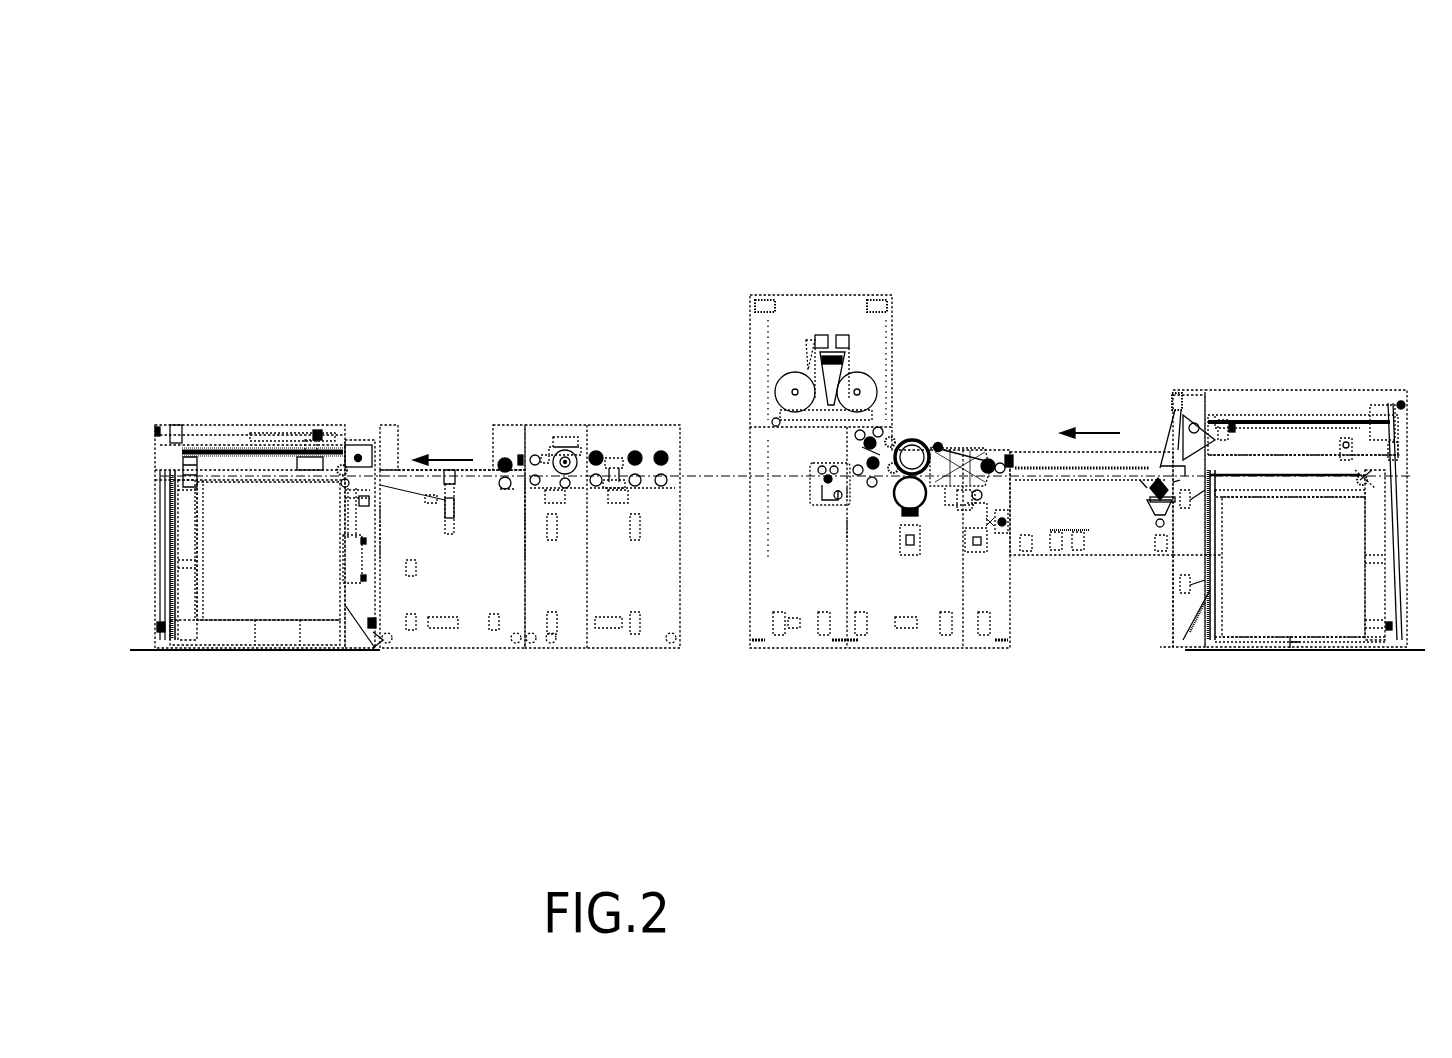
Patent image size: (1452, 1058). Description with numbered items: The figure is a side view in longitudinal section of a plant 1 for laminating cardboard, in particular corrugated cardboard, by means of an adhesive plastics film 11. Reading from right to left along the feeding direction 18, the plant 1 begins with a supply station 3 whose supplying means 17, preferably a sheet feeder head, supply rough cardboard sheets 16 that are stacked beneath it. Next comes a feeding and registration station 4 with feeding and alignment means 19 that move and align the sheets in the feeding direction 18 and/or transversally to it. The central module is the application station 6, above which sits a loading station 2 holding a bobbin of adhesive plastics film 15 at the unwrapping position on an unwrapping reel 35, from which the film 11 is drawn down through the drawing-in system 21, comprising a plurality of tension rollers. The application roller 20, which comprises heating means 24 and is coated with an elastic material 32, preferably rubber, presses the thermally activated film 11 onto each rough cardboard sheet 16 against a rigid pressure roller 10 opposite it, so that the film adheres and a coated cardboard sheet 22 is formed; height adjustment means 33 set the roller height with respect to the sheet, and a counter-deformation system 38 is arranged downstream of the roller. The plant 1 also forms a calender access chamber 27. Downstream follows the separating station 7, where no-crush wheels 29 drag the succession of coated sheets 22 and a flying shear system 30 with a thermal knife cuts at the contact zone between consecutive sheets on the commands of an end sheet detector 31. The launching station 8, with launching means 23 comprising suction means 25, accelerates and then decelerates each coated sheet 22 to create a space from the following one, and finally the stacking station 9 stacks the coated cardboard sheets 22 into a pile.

The plant for laminating cardboard 1 is at (483, 136).
The loading station 2 is at (818, 246).
The supply station 3 is at (1378, 356).
The feeding and registration station 4 is at (1135, 430).
The application station 6 is at (883, 584).
The separating station 7 is at (630, 672).
The launching station 8 is at (433, 670).
The stacking station 9 is at (253, 672).
The pressure roller 10 is at (940, 512).
The adhesive plastics film 11 is at (756, 262).
The bobbin of adhesive plastics film 15 is at (857, 390).
The rough cardboard sheet 16 is at (1293, 578).
The supplying means 17 is at (1270, 437).
The feeding direction 18 is at (437, 458).
The feeding and alignment means 19 is at (999, 556).
The application roller 20 is at (928, 442).
The drawing-in system 21 is at (860, 490).
The coated cardboard sheet 22 is at (270, 520).
The launching means 23 is at (433, 350).
The suction means 25 is at (460, 418).
The heating means 24 is at (909, 500).
The calender access chamber 27 is at (812, 578).
The no-crush wheels 29 is at (593, 428).
The flying shear system 30 is at (553, 420).
The end sheet detector 31 is at (610, 428).
The elastic material 32 is at (940, 447).
The height adjustment means 33 is at (905, 424).
The unwrapping reel 35 is at (795, 390).
The counter-deformation system 38 is at (828, 478).